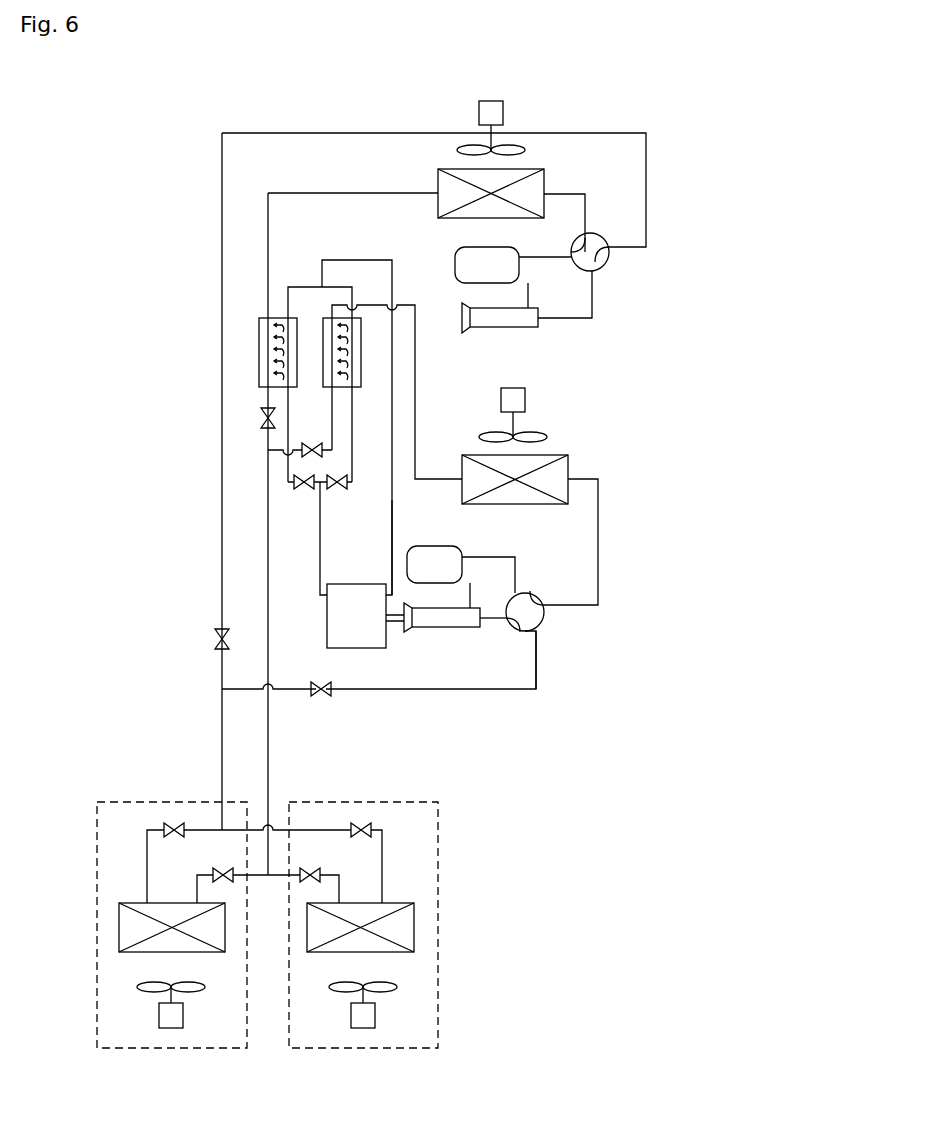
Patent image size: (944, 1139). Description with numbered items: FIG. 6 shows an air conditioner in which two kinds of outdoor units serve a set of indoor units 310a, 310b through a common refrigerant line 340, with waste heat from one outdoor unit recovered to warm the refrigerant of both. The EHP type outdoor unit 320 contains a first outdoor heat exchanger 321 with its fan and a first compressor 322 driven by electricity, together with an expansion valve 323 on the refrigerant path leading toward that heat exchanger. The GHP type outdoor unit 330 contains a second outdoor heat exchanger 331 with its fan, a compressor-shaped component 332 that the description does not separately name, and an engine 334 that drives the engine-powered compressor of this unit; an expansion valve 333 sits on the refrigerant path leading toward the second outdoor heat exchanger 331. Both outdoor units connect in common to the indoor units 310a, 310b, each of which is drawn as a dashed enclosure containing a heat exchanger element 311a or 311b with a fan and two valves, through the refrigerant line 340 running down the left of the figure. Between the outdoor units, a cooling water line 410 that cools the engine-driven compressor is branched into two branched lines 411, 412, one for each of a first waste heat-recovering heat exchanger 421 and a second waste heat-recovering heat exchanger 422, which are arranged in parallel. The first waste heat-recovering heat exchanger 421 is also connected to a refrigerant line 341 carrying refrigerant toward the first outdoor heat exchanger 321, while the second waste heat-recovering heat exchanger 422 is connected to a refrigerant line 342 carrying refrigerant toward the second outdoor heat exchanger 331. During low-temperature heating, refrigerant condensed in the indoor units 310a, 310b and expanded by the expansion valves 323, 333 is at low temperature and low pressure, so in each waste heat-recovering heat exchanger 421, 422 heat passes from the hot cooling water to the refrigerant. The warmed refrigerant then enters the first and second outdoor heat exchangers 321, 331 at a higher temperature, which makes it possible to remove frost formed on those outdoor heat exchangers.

The EHP type outdoor unit 320 is at (590, 110).
The first outdoor heat exchanger 321 is at (544, 178).
The first compressor 322 is at (518, 327).
The expansion valve 323 is at (260, 418).
The GHP type outdoor unit 330 is at (556, 652).
The second outdoor heat exchanger 331 is at (545, 455).
The second compressor 332 is at (430, 627).
The expansion valve 333 is at (290, 434).
The engine 334 is at (352, 648).
The refrigerant line 340 is at (195, 209).
The refrigerant line 341 is at (268, 396).
The refrigerant line 342 is at (333, 410).
The cooling water line 410 is at (350, 250).
The branched line 411 is at (288, 467).
The branched line 412 is at (353, 443).
The first waste heat-recovering heat exchanger 421 is at (259, 343).
The second waste heat-recovering heat exchanger 422 is at (331, 307).
The indoor unit 310a is at (411, 778).
The indoor unit 310b is at (116, 778).
The first indoor heat exchanger 311a is at (414, 928).
The second indoor heat exchanger 311b is at (119, 928).